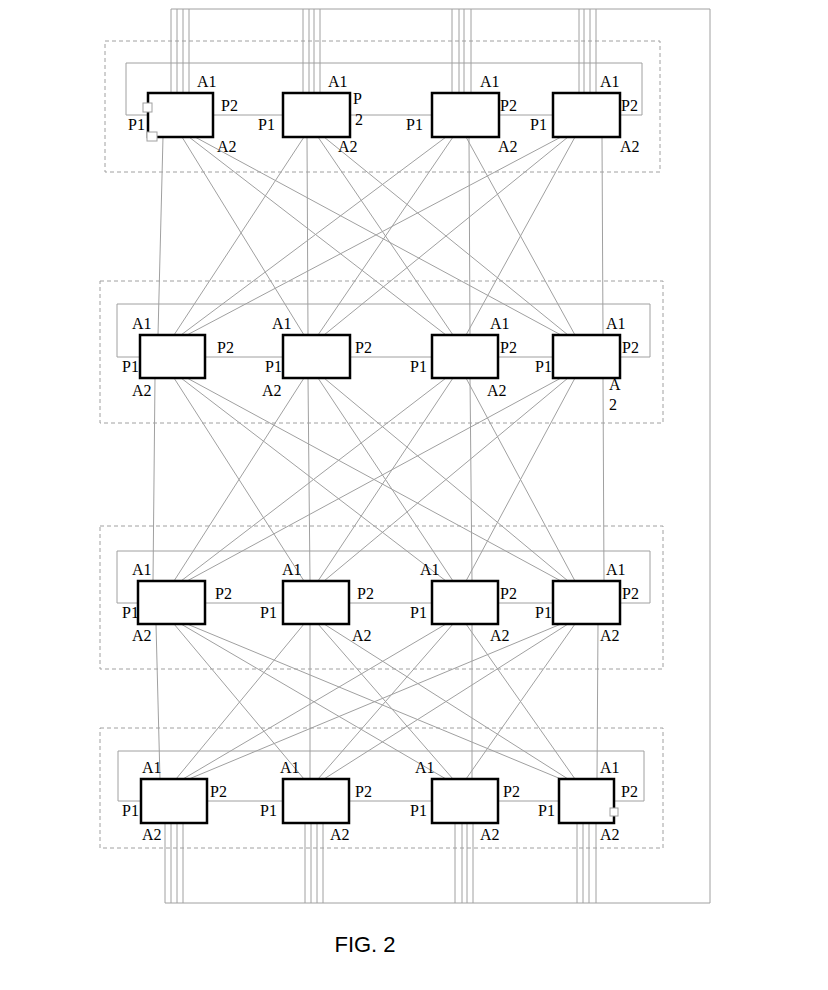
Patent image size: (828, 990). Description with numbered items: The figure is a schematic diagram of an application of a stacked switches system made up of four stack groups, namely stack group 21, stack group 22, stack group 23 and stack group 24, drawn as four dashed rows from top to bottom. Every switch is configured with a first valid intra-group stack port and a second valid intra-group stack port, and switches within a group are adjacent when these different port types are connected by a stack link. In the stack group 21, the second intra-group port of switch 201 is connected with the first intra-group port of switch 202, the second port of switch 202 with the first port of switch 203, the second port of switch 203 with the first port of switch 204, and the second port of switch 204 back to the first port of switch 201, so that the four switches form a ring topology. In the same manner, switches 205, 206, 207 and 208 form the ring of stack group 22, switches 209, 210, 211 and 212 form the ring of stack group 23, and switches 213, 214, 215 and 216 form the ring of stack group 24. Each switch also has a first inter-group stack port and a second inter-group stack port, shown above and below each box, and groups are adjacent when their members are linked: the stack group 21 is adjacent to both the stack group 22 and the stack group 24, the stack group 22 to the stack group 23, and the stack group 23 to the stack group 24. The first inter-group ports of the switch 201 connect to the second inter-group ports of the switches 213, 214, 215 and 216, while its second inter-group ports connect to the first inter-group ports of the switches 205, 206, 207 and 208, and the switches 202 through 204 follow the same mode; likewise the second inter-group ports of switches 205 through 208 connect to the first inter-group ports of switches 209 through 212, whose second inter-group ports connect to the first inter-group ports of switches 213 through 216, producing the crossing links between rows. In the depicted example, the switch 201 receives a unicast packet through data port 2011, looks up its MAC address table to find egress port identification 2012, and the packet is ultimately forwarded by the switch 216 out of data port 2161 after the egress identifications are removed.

The stack group 21 is at (125, 41).
The stack group 22 is at (125, 281).
The stack group 23 is at (125, 526).
The stack group 24 is at (125, 728).
The switch 201 is at (180, 115).
The switch 202 is at (316, 115).
The switch 203 is at (465, 115).
The switch 204 is at (586, 115).
The switch 205 is at (172, 356).
The switch 206 is at (316, 356).
The switch 207 is at (465, 356).
The switch 208 is at (586, 356).
The switch 209 is at (171, 602).
The switch 210 is at (316, 602).
The switch 211 is at (465, 602).
The switch 212 is at (586, 602).
The switch 213 is at (174, 801).
The switch 214 is at (316, 801).
The switch 215 is at (465, 801).
The switch 216 is at (586, 801).
The data port 2011 is at (143, 104).
The port identification 2012 is at (147, 139).
The data port 2161 is at (618, 812).